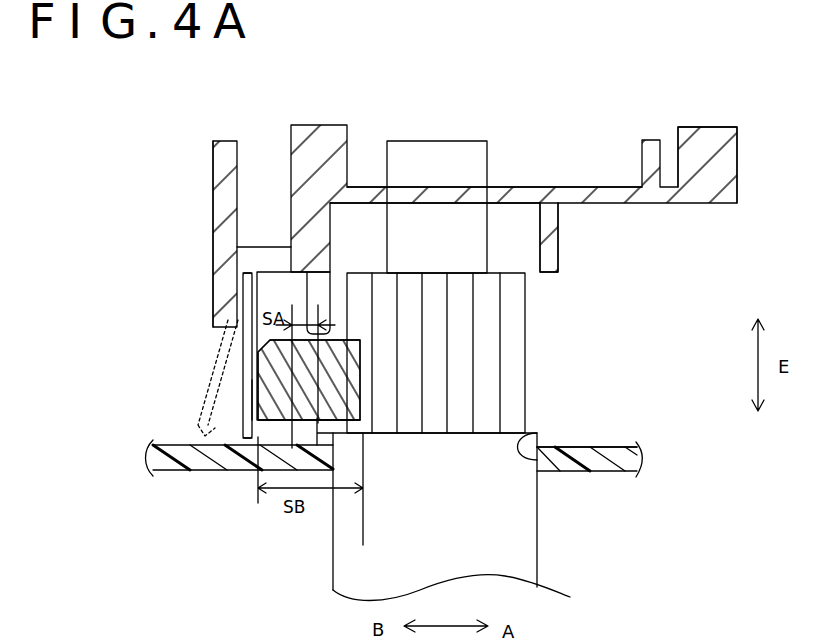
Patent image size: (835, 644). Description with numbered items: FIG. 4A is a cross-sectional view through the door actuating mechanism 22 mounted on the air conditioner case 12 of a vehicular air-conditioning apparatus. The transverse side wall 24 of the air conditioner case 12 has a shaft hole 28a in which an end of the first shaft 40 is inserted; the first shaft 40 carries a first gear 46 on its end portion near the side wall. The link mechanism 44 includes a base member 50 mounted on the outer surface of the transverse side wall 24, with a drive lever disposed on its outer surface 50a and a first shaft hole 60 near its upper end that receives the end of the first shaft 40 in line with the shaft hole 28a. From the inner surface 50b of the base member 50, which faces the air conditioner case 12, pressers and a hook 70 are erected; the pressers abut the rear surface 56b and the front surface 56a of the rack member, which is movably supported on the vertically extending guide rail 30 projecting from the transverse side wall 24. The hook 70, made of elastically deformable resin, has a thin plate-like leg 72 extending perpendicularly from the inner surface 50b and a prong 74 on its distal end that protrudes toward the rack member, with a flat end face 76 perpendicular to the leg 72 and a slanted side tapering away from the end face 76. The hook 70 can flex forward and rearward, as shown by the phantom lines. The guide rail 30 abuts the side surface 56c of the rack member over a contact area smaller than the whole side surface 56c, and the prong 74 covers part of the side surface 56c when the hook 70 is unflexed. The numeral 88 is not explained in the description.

The air conditioner case 12 is at (632, 492).
The door actuating mechanism 22 is at (268, 137).
The transverse side wall 24 is at (598, 446).
The shaft hole 28a is at (521, 426).
The guide rail 30 is at (341, 438).
The first shaft 40 is at (537, 539).
The link mechanism 44 is at (568, 292).
The first gear 46 is at (525, 327).
The base member 50 is at (722, 116).
The outer surface 50a is at (591, 186).
The inner surface 50b is at (214, 249).
The front surface 56a is at (365, 327).
The rear surface 56b is at (255, 362).
The side surface 56c is at (343, 427).
The first shaft hole 60 is at (480, 197).
The hook 70 is at (232, 383).
The leg 72 is at (233, 318).
The prong 74 is at (250, 440).
The end face 76 is at (256, 405).
The operation portion 88 is at (362, 368).